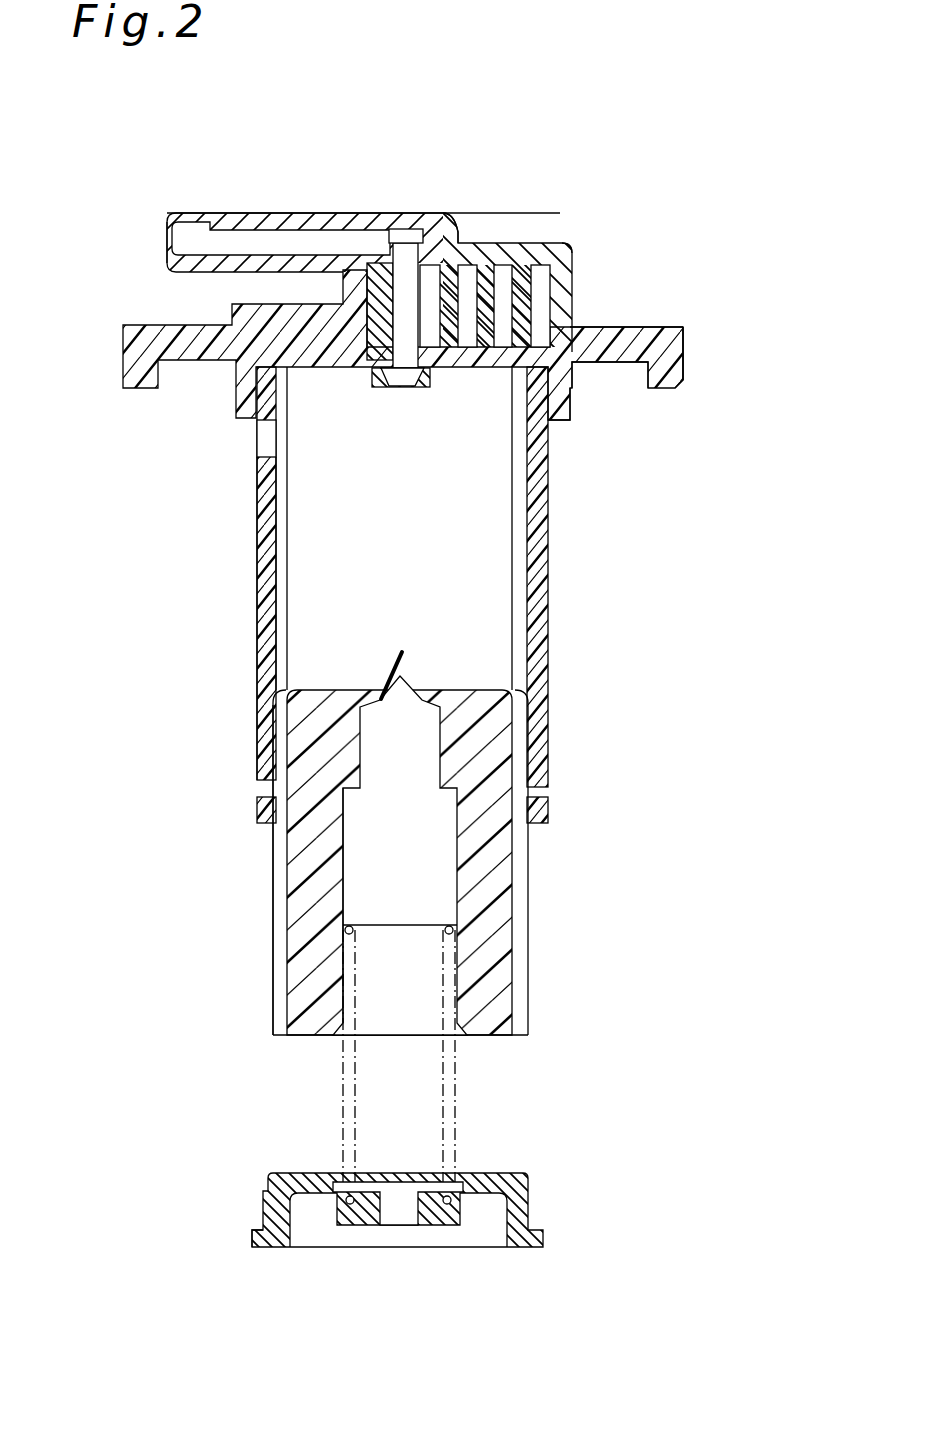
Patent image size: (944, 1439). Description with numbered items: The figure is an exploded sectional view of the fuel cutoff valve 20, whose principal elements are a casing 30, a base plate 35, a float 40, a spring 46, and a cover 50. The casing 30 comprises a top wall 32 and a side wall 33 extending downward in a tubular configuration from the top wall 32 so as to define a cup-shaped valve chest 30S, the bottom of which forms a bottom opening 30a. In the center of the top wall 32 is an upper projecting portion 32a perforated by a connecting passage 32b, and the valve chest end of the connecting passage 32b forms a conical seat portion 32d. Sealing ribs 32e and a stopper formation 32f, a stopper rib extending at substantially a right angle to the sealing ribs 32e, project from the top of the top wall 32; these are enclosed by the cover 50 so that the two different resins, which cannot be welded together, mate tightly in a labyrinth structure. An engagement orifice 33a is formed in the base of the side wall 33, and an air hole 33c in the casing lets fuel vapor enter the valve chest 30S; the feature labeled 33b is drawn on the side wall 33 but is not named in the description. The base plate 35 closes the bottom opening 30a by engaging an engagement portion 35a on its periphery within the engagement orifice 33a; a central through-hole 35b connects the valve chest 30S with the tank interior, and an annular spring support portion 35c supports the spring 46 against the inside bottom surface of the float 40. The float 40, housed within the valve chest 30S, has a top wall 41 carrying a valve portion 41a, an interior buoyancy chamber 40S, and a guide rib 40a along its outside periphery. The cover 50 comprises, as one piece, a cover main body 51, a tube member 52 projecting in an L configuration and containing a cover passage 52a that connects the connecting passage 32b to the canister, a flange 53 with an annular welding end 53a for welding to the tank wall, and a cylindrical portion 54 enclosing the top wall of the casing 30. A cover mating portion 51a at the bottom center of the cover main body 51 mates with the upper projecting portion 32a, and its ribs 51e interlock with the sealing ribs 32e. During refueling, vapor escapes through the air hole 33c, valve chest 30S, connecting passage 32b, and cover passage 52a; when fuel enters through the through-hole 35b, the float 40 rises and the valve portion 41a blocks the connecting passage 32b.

The fuel cutoff valve 20 is at (705, 186).
The cover 50 is at (462, 130).
The cover main body 51 is at (563, 318).
The cover mating portion 51a is at (415, 288).
The ribs 51e is at (483, 288).
The tube member 52 is at (320, 214).
The cover passage 52a is at (240, 230).
The top wall 32 is at (305, 364).
The upper projecting portion 32a is at (380, 285).
The connecting passage 32b is at (400, 283).
The conical seat portion 32d is at (418, 388).
The sealing ribs 32e is at (513, 268).
The stopper formation 32f is at (598, 360).
The flange 53 is at (640, 340).
The annular welding end 53a is at (663, 384).
The cylindrical portion 54 is at (563, 410).
The casing 30 is at (561, 609).
The valve chest 30S is at (302, 615).
The bottom opening 30a is at (520, 782).
The side wall 33 is at (257, 558).
The engagement orifice 33a is at (267, 792).
The sleeve wall 33b is at (267, 517).
The air hole 33c is at (267, 448).
The float 40 is at (543, 872).
The buoyancy chamber 40S is at (412, 884).
The guide rib 40a is at (277, 915).
The top wall 41 is at (478, 696).
The valve portion 41a is at (412, 663).
The spring 46 is at (453, 1104).
The base plate 35 is at (543, 1206).
The engagement portion 35a is at (263, 1203).
The through-hole 35b is at (393, 1217).
The spring support portion 35c is at (345, 1205).